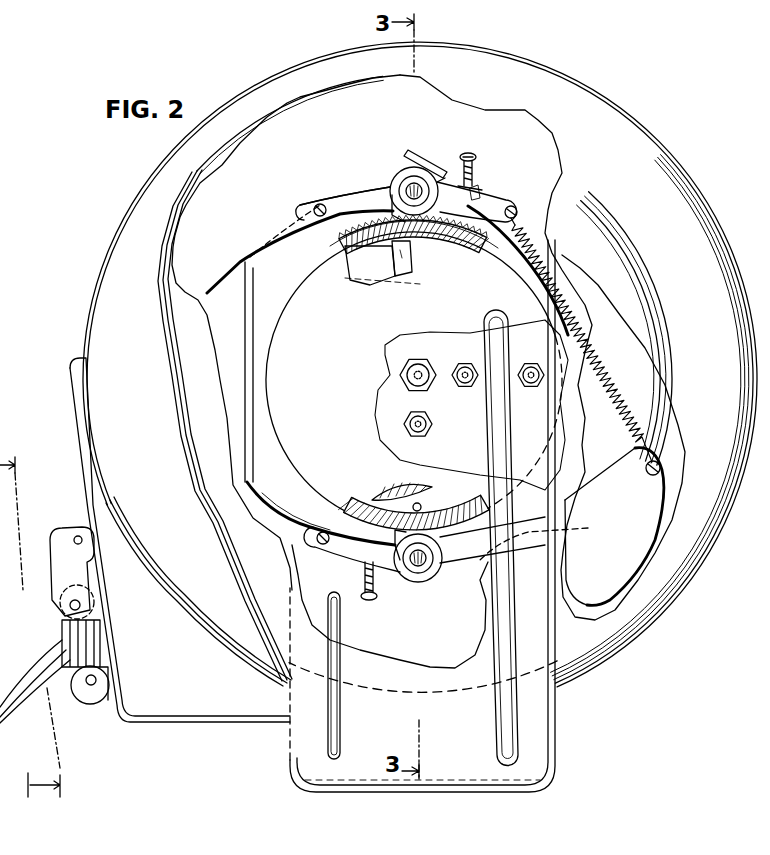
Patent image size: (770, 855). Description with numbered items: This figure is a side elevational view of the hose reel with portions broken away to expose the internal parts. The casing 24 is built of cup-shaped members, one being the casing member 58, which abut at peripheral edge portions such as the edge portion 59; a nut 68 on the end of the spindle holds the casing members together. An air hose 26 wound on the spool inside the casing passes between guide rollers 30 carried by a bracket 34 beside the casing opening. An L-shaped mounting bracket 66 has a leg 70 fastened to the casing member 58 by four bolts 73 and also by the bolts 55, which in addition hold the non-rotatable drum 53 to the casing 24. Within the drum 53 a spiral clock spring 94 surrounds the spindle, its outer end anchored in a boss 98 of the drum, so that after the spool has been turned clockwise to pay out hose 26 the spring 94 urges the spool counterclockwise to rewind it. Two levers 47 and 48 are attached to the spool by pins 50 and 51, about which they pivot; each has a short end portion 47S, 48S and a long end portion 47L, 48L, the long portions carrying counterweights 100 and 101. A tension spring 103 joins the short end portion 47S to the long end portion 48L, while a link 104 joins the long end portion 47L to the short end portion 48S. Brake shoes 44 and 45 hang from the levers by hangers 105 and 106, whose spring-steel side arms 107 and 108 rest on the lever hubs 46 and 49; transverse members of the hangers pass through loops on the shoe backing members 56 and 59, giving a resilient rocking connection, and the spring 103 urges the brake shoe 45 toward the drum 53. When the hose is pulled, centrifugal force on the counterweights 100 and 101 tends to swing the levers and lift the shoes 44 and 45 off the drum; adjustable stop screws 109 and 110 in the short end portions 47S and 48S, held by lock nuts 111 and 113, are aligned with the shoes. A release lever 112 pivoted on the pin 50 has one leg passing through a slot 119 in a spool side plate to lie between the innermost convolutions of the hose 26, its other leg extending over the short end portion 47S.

The casing 24 is at (623, 129).
The air hose 26 is at (28, 688).
The guide rollers 30 is at (70, 640).
The bracket 34 is at (66, 523).
The brake shoe 44 is at (450, 228).
The brake shoe 45 is at (353, 521).
The hub 46 is at (412, 180).
The lever 47 is at (370, 180).
The long end portion 47L is at (344, 200).
The short end portion 47S is at (498, 206).
The lever 48 is at (460, 556).
The long end portion 48L is at (549, 538).
The short end portion 48S is at (342, 548).
The hub 49 is at (402, 566).
The pin 50 is at (418, 184).
The pin 51 is at (416, 566).
The drum 53 is at (312, 466).
The bolts 55 is at (525, 382).
The backing member 56 is at (370, 233).
The casing member 58 is at (628, 157).
The peripheral edge portion 59 is at (292, 516).
The mounting bracket 66 is at (550, 723).
The nut 68 is at (412, 372).
The leg 70 is at (556, 745).
The bolts 73 is at (462, 378).
The spiral spring 94 is at (395, 496).
The boss 98 is at (420, 504).
The counterweight 100 is at (262, 202).
The counterweight 101 is at (655, 490).
The tension spring 103 is at (601, 386).
The link 104 is at (245, 455).
The hanger 105 is at (402, 159).
The hanger 106 is at (436, 592).
The side arms 107 is at (445, 178).
The side arms 108 is at (440, 577).
The screw 109 is at (478, 160).
The screw 110 is at (372, 600).
The lock nut 111 is at (478, 186).
The release lever 112 is at (410, 262).
The lock nut 113 is at (362, 568).
The slot 119 is at (358, 272).